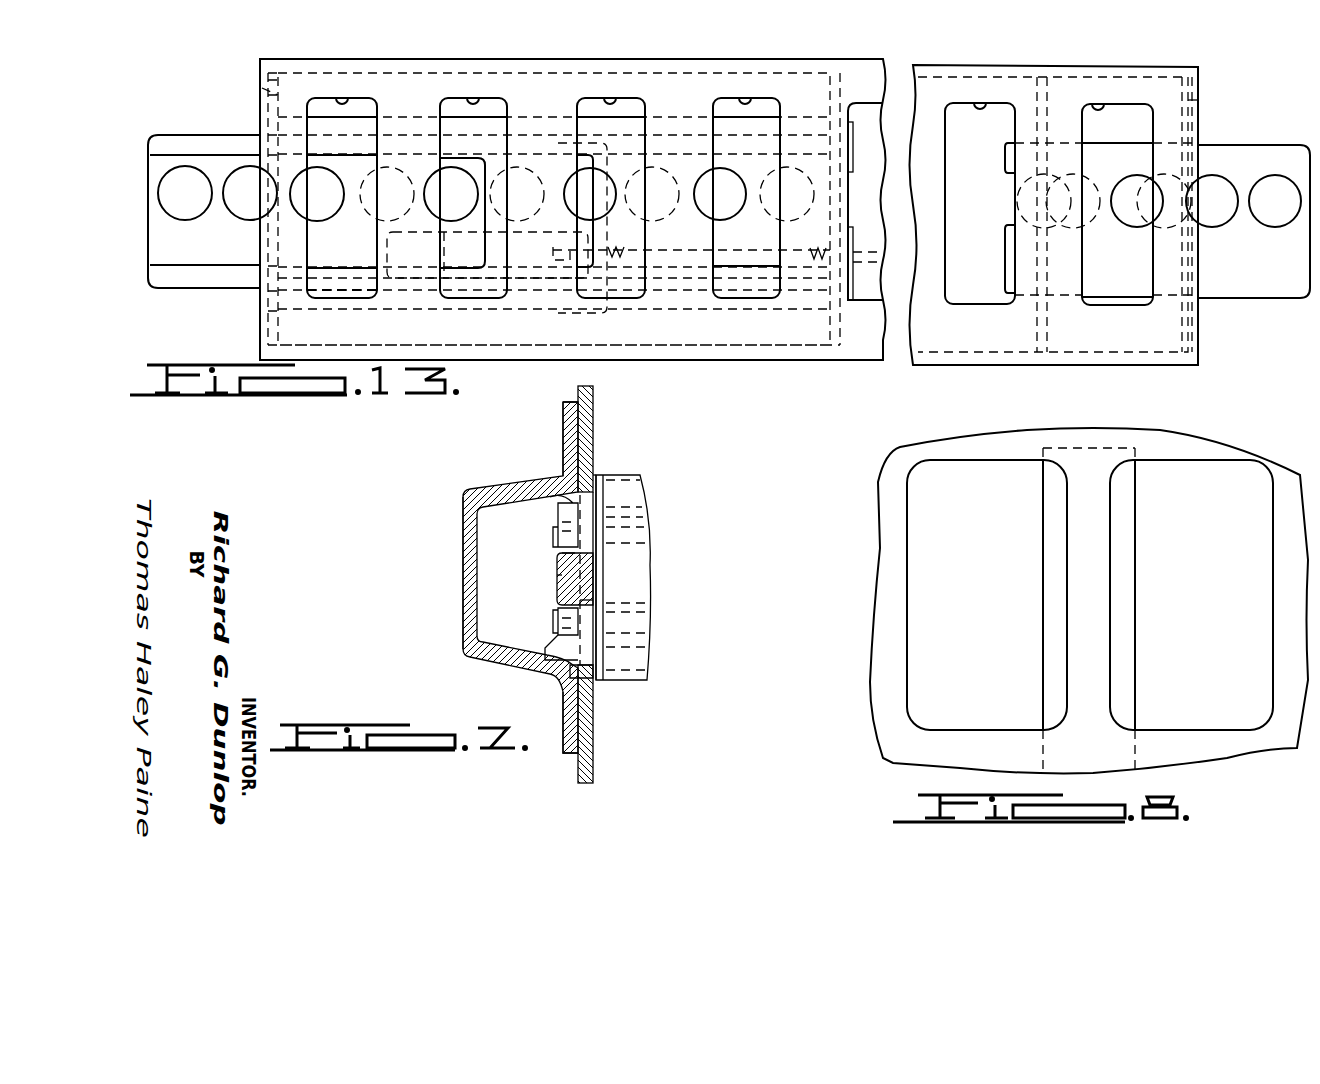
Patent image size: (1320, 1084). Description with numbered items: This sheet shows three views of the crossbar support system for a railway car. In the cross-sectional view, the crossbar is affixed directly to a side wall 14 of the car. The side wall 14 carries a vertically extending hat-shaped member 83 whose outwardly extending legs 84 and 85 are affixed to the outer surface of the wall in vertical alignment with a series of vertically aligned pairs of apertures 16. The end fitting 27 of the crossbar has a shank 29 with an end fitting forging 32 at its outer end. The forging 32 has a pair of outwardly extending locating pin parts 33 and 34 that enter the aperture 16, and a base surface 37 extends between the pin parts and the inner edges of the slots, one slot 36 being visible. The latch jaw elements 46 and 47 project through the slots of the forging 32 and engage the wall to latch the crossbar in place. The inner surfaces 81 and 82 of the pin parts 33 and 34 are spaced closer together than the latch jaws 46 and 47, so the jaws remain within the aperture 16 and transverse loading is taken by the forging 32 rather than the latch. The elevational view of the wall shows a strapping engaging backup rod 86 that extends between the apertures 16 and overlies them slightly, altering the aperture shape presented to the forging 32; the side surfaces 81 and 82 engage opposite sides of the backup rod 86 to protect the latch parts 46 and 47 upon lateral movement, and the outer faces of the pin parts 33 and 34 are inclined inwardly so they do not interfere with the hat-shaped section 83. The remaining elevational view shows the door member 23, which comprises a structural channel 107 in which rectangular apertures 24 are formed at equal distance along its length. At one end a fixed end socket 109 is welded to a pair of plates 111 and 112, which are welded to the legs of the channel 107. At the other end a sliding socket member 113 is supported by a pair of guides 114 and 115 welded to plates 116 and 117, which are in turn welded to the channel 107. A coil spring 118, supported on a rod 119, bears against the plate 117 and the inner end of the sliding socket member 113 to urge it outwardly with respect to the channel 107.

In FIG. 13, the door member 23 is at (672, 58).
In FIG. 13, the rectangular apertures 24 is at (462, 102).
In FIG. 13, the sliding socket member 113 is at (163, 135).
In FIG. 13, the guide 114 is at (287, 78).
In FIG. 13, the guide 115 is at (292, 310).
In FIG. 13, the plate 116 is at (262, 92).
In FIG. 13, the plate 117 is at (830, 85).
In FIG. 13, the coil spring 118 is at (625, 305).
In FIG. 13, the rod 119 is at (548, 312).
In FIG. 13, the structural channel 107 is at (945, 65).
In FIG. 13, the fixed end socket 109 is at (1240, 145).
In FIG. 13, the plate 111 is at (1055, 85).
In FIG. 13, the plate 112 is at (1200, 100).
In FIG. 7, the side wall 14 is at (594, 408).
In FIG. 8, the side wall 14 is at (957, 762).
In FIG. 7, the apertures 16 is at (570, 503).
In FIG. 8, the apertures 16 is at (920, 535).
In FIG. 7, the end fitting 27 is at (625, 470).
In FIG. 7, the shank 29 is at (637, 475).
In FIG. 7, the end fitting forging 32 is at (599, 470).
In FIG. 7, the locating pin part 33 is at (463, 526).
In FIG. 7, the locating pin part 34 is at (545, 650).
In FIG. 7, the slot 36 is at (555, 575).
In FIG. 7, the base surface 37 is at (570, 548).
In FIG. 7, the jaw element 46 is at (555, 530).
In FIG. 7, the jaw element 47 is at (550, 615).
In FIG. 7, the inner surface 81 is at (580, 572).
In FIG. 7, the inner surface 82 is at (583, 598).
In FIG. 7, the hat-shaped member 83 is at (460, 580).
In FIG. 7, the leg 84 is at (562, 703).
In FIG. 7, the leg 85 is at (563, 426).
In FIG. 8, the strapping engaging backup rod 86 is at (1319, 458).